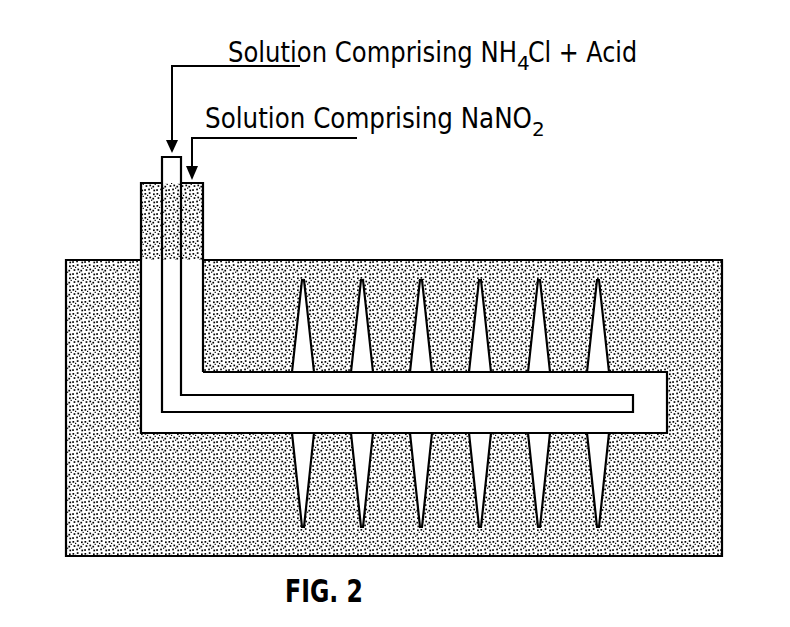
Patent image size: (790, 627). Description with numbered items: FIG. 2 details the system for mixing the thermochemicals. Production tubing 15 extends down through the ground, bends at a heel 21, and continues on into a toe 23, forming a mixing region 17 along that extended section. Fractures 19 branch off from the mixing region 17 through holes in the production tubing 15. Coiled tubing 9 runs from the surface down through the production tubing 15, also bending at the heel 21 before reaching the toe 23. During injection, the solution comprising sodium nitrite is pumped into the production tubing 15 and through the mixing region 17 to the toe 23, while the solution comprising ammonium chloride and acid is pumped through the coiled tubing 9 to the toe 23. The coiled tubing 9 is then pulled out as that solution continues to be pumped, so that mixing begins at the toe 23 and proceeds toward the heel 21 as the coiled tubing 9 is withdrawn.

The coiled tubing 9 is at (170, 213).
The production tubing 15 is at (150, 257).
The mixing region 17 is at (555, 420).
The fractures 19 is at (479, 322).
The heel 21 is at (145, 403).
The toe 23 is at (648, 400).